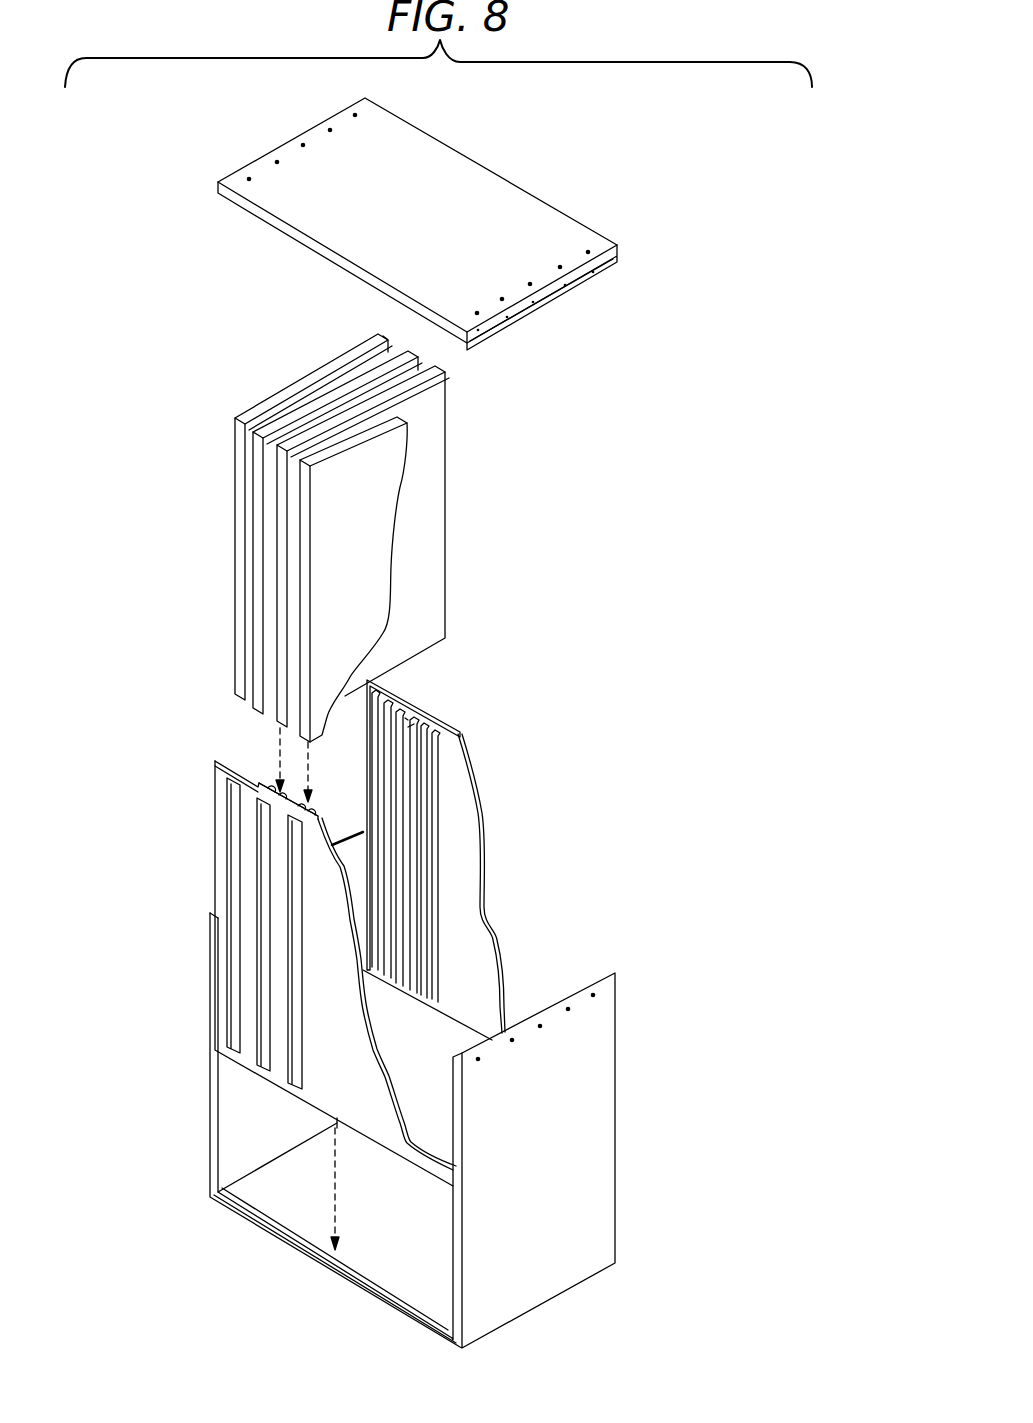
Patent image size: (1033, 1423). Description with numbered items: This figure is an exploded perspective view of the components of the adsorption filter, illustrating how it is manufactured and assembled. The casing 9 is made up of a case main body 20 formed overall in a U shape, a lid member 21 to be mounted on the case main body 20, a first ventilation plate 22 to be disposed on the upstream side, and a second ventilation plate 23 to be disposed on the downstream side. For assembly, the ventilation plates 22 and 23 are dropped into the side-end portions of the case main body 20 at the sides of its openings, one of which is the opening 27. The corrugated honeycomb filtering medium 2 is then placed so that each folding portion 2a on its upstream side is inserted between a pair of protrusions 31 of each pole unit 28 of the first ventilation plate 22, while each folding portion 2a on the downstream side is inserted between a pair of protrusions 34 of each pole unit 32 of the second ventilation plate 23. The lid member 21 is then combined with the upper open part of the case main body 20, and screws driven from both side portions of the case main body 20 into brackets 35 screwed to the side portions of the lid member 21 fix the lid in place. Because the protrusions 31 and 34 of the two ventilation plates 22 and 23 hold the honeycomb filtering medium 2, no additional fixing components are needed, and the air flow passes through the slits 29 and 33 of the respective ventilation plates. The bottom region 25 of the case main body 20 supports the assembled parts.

The casing 9 is at (675, 248).
The corrugated honeycomb filtering medium 2 is at (278, 392).
The folding portion 2a is at (300, 542).
The case main body 20 is at (615, 1098).
The lid member 21 is at (480, 163).
The first ventilation plate 22 is at (462, 729).
The second ventilation plate 23 is at (215, 870).
The bottom plate 25 is at (240, 1219).
The opening 27 is at (314, 1245).
The pole unit 28 is at (412, 722).
The slit 29 is at (405, 723).
The protrusion 31 is at (383, 333).
The pole unit 32 is at (282, 995).
The slit 33 is at (295, 818).
The protrusion 34 is at (300, 808).
The bracket 35 is at (585, 280).